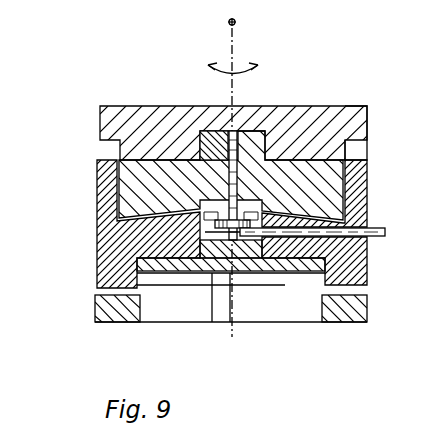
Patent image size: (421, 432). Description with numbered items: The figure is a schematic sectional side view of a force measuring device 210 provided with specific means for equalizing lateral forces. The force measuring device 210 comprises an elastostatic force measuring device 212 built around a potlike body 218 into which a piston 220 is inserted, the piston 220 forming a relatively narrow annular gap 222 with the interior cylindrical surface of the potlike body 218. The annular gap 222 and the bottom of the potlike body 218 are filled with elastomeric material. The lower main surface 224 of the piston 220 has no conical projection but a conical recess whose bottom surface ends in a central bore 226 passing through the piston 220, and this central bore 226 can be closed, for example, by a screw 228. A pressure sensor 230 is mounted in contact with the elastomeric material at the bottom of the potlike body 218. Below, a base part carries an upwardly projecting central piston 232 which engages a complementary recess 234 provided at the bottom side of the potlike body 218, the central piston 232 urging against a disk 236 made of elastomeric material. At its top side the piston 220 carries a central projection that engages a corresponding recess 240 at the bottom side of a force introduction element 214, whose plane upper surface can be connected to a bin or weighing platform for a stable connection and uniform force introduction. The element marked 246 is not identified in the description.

The force measuring device 210 is at (328, 48).
The elastostatic force measuring device 212 is at (90, 167).
The force introduction element 214 is at (343, 116).
The potlike body 218 is at (112, 276).
The piston 220 is at (142, 170).
The annular gap 222 is at (105, 180).
The lower main surface 224 is at (112, 236).
The central bore 226 is at (202, 132).
The screw 228 is at (222, 130).
The pressure sensor 230 is at (210, 292).
The central piston 232 is at (257, 306).
The recess 234 is at (152, 257).
The disk 236 is at (163, 273).
The recess 240 is at (250, 129).
The base block 246 is at (342, 313).